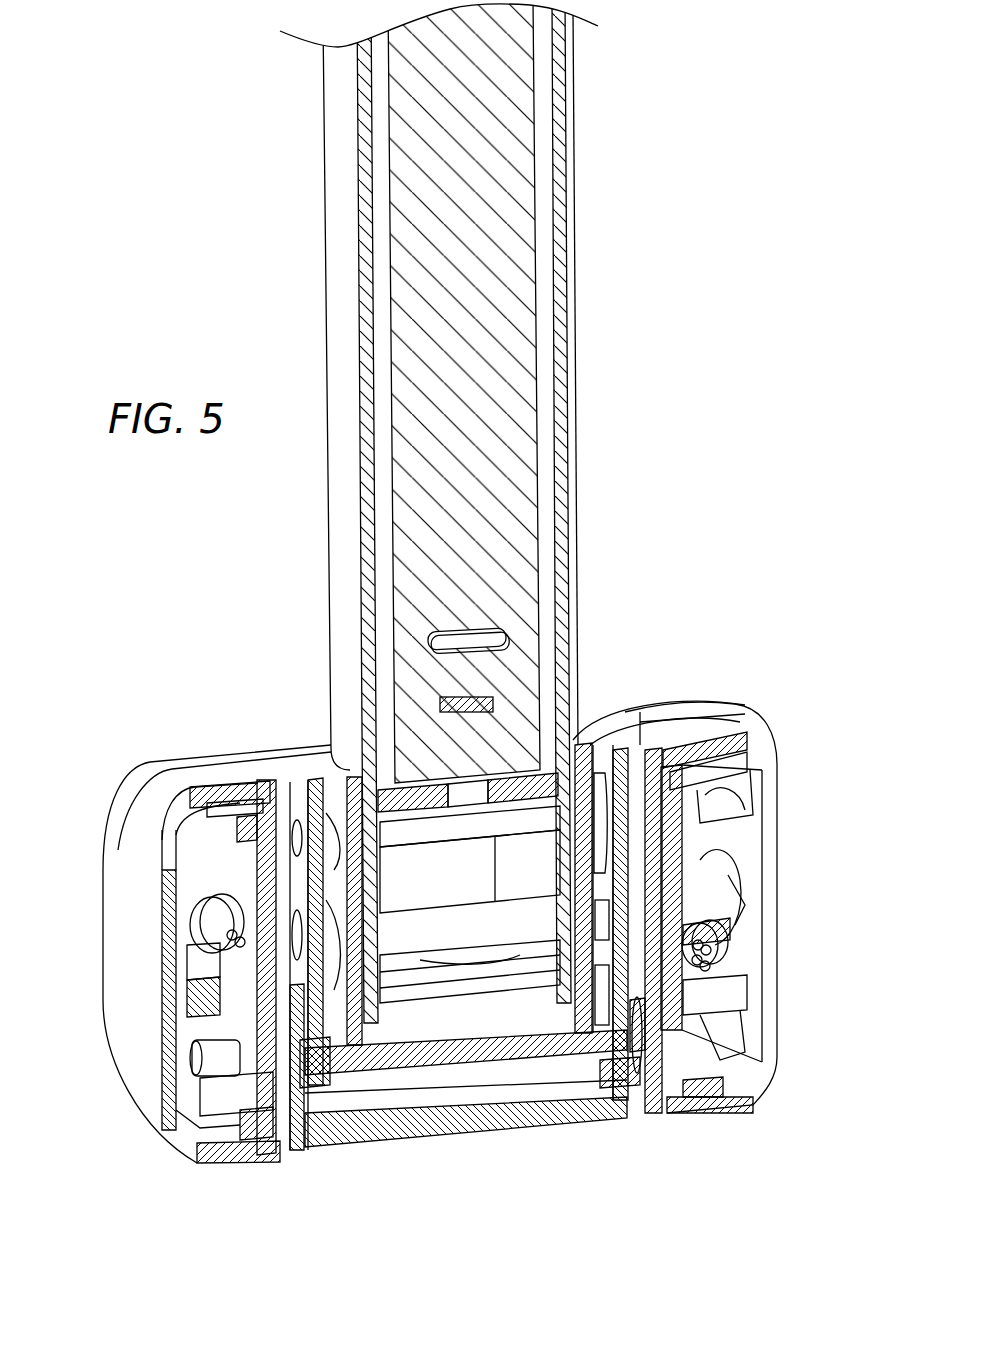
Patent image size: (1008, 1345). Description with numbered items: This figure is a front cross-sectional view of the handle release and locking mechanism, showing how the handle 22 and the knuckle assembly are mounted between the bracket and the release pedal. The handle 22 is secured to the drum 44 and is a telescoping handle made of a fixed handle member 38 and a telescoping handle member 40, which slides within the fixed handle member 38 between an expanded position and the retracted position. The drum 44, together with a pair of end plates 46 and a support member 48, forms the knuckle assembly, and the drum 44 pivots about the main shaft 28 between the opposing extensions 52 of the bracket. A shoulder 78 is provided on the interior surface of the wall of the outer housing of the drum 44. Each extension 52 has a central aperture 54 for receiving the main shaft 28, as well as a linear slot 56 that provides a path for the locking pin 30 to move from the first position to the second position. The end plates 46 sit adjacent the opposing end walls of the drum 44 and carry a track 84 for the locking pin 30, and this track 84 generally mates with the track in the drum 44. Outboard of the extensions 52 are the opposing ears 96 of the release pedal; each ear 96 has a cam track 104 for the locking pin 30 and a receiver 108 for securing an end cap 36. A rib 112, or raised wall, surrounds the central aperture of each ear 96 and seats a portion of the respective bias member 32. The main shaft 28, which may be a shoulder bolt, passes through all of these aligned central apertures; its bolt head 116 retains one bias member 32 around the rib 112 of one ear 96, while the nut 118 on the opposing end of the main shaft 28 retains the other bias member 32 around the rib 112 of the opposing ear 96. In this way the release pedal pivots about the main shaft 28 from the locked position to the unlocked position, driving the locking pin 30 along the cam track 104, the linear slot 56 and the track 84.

The handle 22 is at (578, 205).
The main shaft 28 is at (473, 933).
The locking pin 30 is at (207, 1053).
The bias member 32 is at (224, 912).
The end cap 36 is at (137, 923).
The fixed handle member 38 is at (565, 300).
The telescoping handle member 40 is at (500, 147).
The drum 44 is at (615, 735).
The end plate 46 is at (320, 1060).
The support member 48 is at (535, 812).
The extension 52 is at (287, 1147).
The central aperture 54 is at (647, 923).
The linear slot 56 is at (637, 1063).
The shoulder 78 is at (650, 750).
The track 84 is at (320, 1057).
The ear 96 is at (210, 767).
The cam track 104 is at (243, 1083).
The receiver 108 is at (673, 775).
The rib 112 is at (605, 888).
The bolt head 116 is at (733, 917).
The nut 118 is at (195, 983).